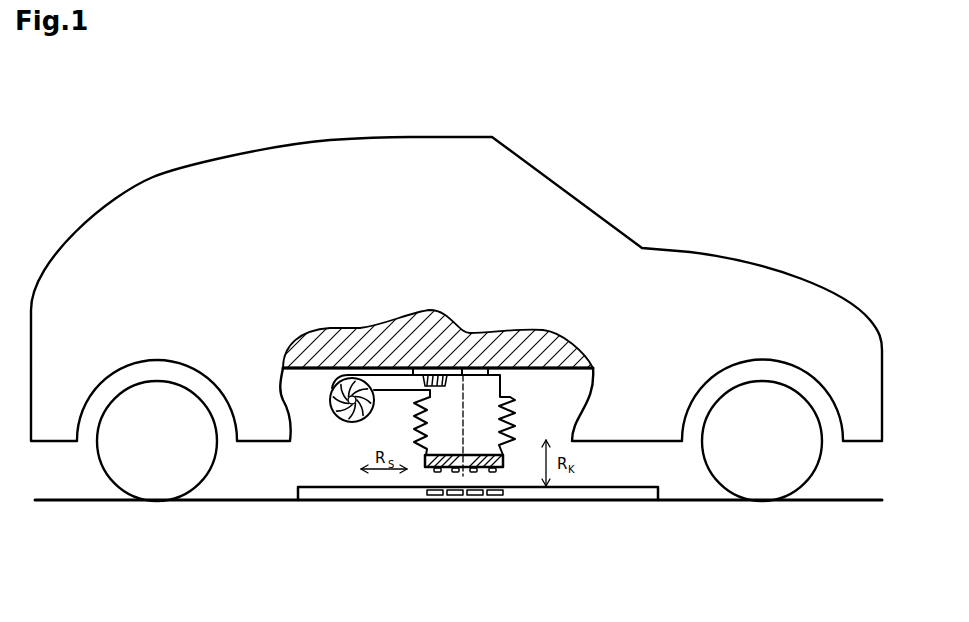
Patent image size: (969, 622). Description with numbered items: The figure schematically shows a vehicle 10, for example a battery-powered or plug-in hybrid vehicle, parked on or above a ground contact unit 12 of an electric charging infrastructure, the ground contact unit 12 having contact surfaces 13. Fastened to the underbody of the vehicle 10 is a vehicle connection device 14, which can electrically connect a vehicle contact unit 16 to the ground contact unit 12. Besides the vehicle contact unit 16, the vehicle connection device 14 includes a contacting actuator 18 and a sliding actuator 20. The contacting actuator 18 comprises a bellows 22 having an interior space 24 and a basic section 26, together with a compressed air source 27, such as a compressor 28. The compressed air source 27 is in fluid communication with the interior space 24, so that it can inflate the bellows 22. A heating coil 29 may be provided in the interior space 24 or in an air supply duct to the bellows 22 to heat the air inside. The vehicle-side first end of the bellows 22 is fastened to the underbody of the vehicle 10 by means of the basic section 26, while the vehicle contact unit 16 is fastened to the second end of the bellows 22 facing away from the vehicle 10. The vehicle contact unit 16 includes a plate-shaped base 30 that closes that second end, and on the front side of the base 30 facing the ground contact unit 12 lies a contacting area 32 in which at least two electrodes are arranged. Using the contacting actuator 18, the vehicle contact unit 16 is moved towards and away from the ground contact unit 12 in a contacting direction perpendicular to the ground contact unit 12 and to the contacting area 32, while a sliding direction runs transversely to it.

The vehicle 10 is at (737, 218).
The ground contact unit 12 is at (632, 497).
The contact surfaces 13 is at (490, 500).
The vehicle connection device 14 is at (558, 400).
The vehicle contact unit 16 is at (420, 473).
The contacting actuator 18 is at (358, 444).
The sliding actuator 20 is at (438, 452).
The bellows 22 is at (503, 452).
The interior space 24 is at (477, 412).
The basic section 26 is at (455, 378).
The compressed air source 27 is at (335, 382).
The compressor 28 is at (381, 386).
The heating coil 29 is at (423, 376).
The base 30 is at (497, 472).
The contacting area 32 is at (442, 473).